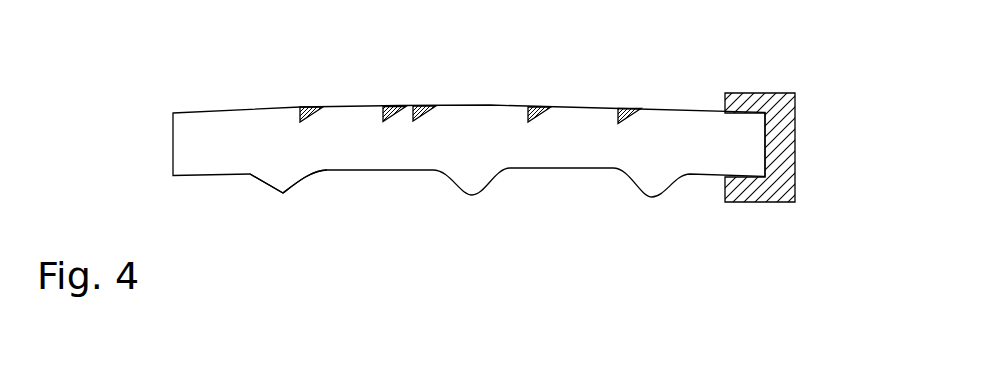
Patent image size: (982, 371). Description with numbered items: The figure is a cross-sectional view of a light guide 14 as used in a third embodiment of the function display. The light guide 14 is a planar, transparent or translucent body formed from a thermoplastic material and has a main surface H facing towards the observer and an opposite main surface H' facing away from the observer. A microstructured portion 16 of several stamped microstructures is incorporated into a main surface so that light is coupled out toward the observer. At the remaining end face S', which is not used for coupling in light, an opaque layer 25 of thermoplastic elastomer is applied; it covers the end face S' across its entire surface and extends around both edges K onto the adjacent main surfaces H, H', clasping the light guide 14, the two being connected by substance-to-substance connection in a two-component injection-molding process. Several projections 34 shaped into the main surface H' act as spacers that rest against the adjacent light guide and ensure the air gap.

The light guide 14 is at (482, 120).
The microstructured portion 16 is at (310, 107).
The opaque layer 25 is at (748, 94).
The projections 34 is at (283, 194).
The main surface H is at (377, 64).
The main surface H' is at (396, 219).
The edges K is at (771, 109).
The remaining end face S' is at (812, 156).